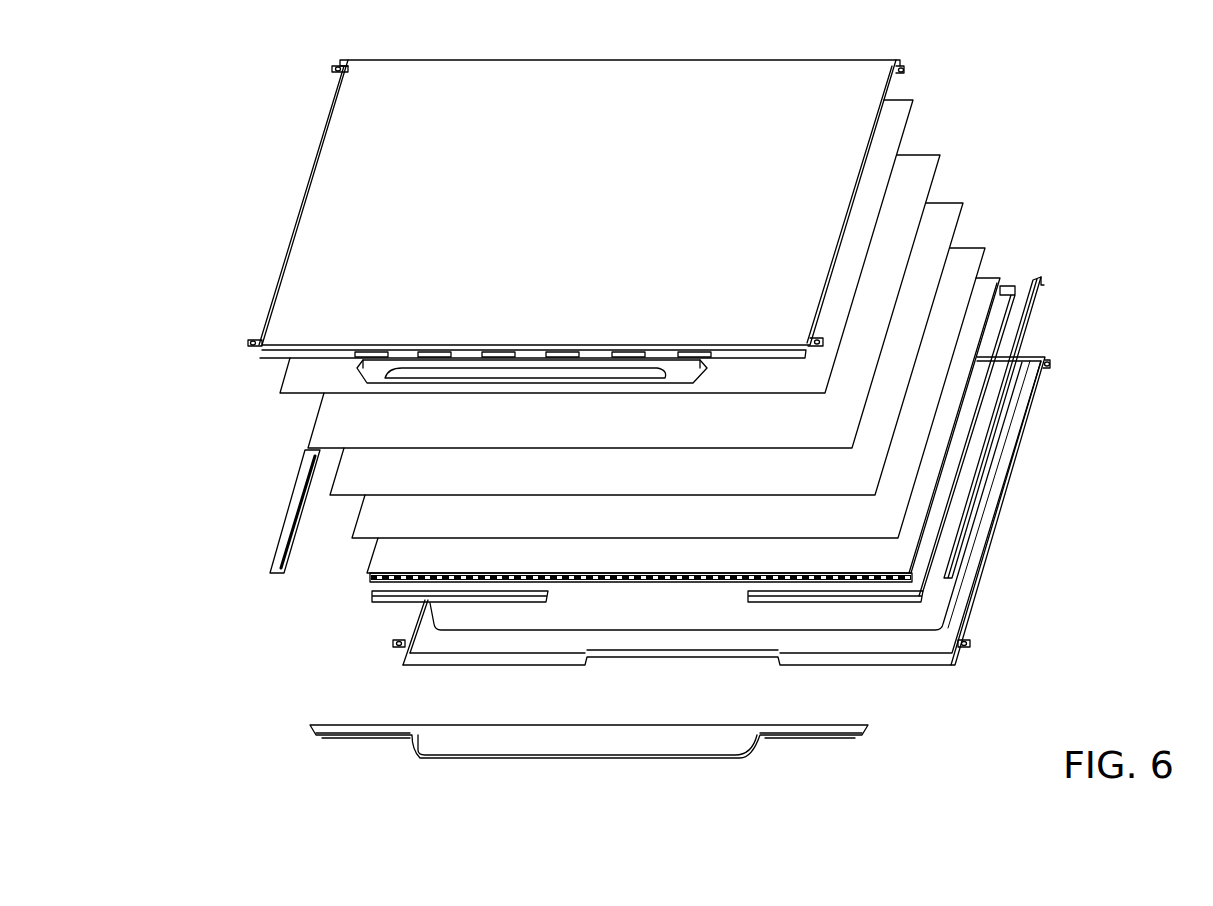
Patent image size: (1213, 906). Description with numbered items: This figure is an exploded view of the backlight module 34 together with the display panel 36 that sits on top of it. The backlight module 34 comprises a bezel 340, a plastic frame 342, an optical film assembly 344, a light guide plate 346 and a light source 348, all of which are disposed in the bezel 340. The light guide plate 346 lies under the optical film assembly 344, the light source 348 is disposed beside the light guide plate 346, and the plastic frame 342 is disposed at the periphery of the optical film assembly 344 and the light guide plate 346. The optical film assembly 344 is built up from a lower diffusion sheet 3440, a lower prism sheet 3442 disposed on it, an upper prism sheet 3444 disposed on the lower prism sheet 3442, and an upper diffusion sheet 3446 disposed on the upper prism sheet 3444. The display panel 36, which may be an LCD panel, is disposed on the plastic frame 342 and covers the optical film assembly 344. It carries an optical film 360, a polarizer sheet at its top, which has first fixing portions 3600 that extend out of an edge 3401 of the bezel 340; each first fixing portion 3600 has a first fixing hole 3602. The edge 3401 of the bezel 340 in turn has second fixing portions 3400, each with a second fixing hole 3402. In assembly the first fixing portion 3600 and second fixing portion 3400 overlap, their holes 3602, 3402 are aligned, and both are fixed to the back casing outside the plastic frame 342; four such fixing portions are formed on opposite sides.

The backlight module 34 is at (1028, 456).
The display panel 36 is at (299, 154).
The optical film 360 is at (340, 220).
The first fixing portion 3600 is at (336, 65).
The first fixing hole 3602 is at (335, 72).
The bezel 340 is at (447, 665).
The second fixing portion 3400 is at (1047, 361).
The edge 3401 is at (986, 540).
The second fixing hole 3402 is at (1050, 367).
The plastic frame 342 is at (372, 596).
The optical film assembly 344 is at (1068, 95).
The lower diffusion sheet 3440 is at (985, 255).
The lower prism sheet 3442 is at (963, 215).
The upper prism sheet 3444 is at (940, 166).
The upper diffusion sheet 3446 is at (913, 116).
The light guide plate 346 is at (370, 556).
The light source 348 is at (360, 583).